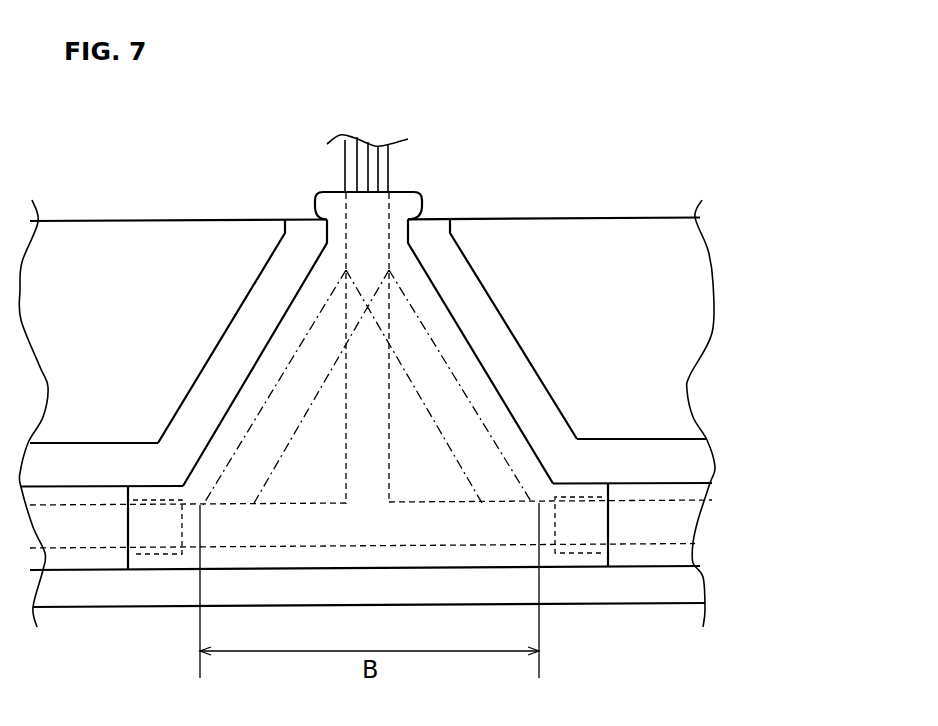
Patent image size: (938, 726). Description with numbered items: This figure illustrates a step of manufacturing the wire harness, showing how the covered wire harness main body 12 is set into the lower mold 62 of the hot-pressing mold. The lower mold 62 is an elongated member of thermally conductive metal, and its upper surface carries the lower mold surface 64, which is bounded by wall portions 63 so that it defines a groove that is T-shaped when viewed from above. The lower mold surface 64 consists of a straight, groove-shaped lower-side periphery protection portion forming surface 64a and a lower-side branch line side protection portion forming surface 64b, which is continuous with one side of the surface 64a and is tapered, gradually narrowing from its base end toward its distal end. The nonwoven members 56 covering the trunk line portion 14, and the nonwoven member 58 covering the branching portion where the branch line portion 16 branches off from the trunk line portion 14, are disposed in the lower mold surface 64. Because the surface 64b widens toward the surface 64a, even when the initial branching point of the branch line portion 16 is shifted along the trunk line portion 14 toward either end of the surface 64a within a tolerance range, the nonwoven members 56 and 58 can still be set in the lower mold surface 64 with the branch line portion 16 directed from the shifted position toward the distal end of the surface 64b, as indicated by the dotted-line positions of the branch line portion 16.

The wire harness main body 12 is at (390, 172).
The trunk line portion 14 is at (643, 548).
The branch line portion 16 is at (295, 353).
The nonwoven members 56 is at (83, 486).
The nonwoven member 58 is at (513, 413).
The lower mold 62 is at (597, 607).
The wall portions 63 is at (680, 438).
The lower mold surface 64 is at (70, 559).
The lower-side periphery protection portion forming surface 64a is at (109, 569).
The lower-side branch line side protection portion forming surface 64b is at (254, 381).